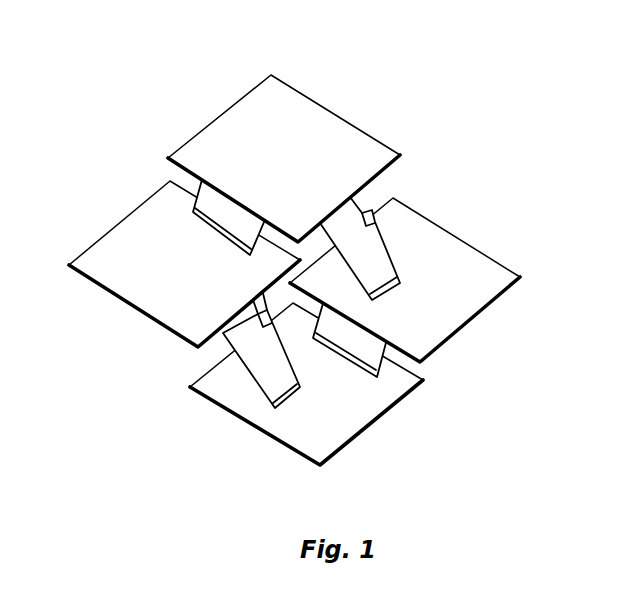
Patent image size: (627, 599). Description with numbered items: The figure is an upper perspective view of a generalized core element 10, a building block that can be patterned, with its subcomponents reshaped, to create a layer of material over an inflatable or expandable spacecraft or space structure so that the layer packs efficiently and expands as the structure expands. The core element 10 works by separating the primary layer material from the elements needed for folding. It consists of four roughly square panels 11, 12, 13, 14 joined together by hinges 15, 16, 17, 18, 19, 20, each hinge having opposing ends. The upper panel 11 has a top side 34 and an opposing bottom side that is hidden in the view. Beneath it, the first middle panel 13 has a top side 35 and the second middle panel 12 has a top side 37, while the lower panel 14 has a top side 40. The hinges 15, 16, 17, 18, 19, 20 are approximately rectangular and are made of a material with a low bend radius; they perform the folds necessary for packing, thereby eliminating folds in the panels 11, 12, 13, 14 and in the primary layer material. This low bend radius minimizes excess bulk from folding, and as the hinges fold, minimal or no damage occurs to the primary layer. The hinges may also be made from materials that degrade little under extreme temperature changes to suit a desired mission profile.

The core element 10 is at (295, 269).
The panel 11 is at (284, 150).
The second middle panel 12 is at (422, 280).
The first middle panel 13 is at (167, 262).
The lower panel 14 is at (306, 406).
The hinge 15 is at (362, 208).
The hinge 16 is at (401, 214).
The hinge 17 is at (233, 355).
The hinge 18 is at (226, 374).
The hinge 19 is at (196, 204).
The hinge 20 is at (368, 355).
The top side 34 is at (267, 133).
The top side 35 is at (192, 282).
The top side 37 is at (462, 273).
The top side 40 is at (340, 428).